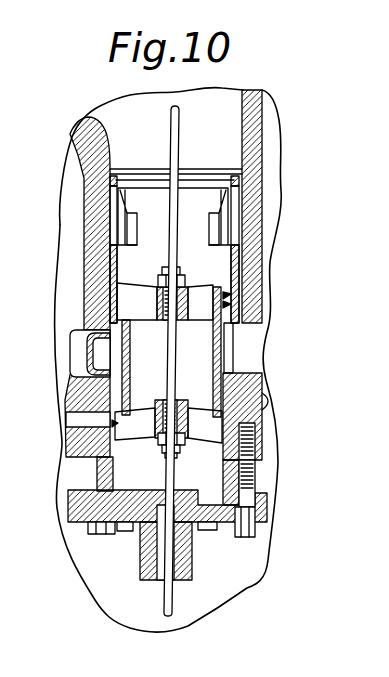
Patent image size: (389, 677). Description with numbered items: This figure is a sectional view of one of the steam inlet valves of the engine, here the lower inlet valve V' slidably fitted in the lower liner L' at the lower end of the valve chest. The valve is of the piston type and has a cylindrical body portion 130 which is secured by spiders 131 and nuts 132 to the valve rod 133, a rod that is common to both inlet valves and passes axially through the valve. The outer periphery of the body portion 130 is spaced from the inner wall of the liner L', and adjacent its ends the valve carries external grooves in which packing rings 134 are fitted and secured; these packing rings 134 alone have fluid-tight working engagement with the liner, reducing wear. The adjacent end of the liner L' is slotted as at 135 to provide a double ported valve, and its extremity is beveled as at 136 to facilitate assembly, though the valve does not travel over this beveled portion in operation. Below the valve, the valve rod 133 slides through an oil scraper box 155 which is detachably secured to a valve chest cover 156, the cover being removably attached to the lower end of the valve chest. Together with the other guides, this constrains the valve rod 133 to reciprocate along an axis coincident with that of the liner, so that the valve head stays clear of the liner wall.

The cylindrical body portion 130 is at (128, 356).
The spiders 131 is at (137, 410).
The nuts 132 is at (182, 280).
The valve rod 133 is at (181, 158).
The packing rings 134 is at (226, 304).
The slots 135 is at (244, 218).
The beveled extremities 136 is at (262, 178).
The oil scraper box 155 is at (140, 540).
The valve chest cover 156 is at (82, 490).
The liner L' is at (271, 206).
The lower inlet valve V' is at (192, 382).